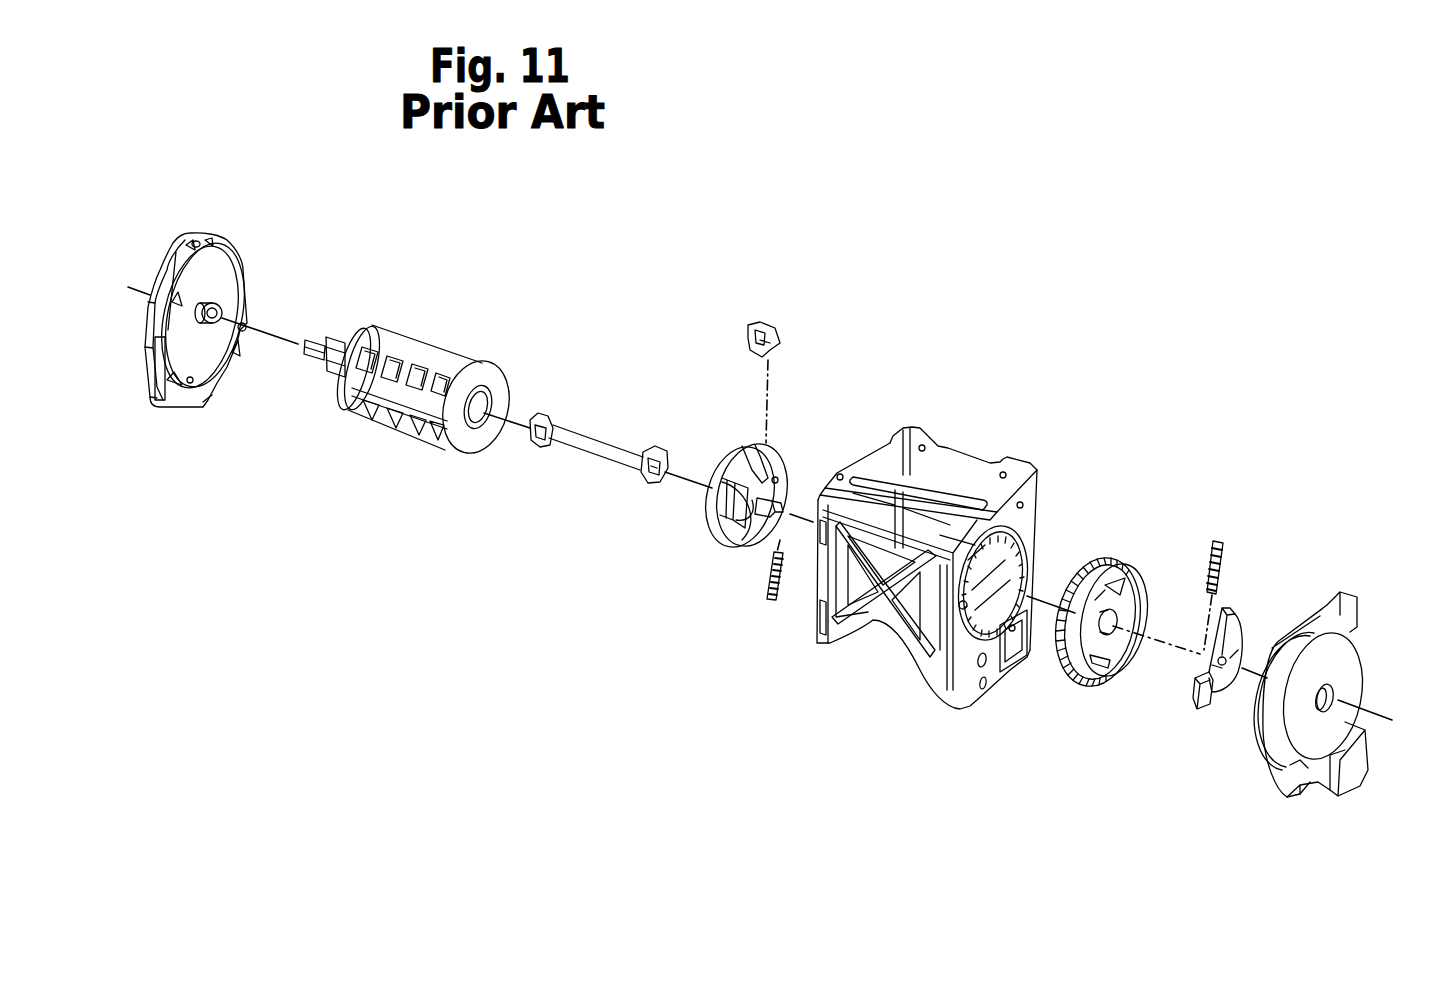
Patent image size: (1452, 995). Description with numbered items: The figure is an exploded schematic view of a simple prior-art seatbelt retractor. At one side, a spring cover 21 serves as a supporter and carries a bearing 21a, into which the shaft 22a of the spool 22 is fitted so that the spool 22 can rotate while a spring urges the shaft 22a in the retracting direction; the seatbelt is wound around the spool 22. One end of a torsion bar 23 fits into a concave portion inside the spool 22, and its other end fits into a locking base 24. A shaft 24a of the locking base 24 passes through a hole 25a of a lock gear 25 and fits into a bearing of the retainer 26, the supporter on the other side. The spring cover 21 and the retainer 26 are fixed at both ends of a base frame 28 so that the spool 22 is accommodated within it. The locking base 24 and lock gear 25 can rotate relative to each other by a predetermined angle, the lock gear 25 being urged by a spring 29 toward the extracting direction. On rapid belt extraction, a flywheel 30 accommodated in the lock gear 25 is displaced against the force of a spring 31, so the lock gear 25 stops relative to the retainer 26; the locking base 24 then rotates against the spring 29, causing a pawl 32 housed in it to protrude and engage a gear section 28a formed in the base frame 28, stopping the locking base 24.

The spring cover 21 is at (210, 232).
The bearing 21a is at (215, 303).
The spool 22 is at (420, 337).
The shaft 22a is at (322, 343).
The torsion bar 23 is at (627, 440).
The locking base 24 is at (777, 462).
The shaft 24a is at (790, 476).
The lock gear 25 is at (1123, 562).
The hole 25a is at (1115, 632).
The retainer 26 is at (1350, 660).
The base frame 28 is at (1030, 463).
The gear section 28a is at (1027, 558).
The spring 29 is at (768, 602).
The flywheel 30 is at (1195, 710).
The spring 31 is at (1222, 541).
The pawl 32 is at (766, 323).